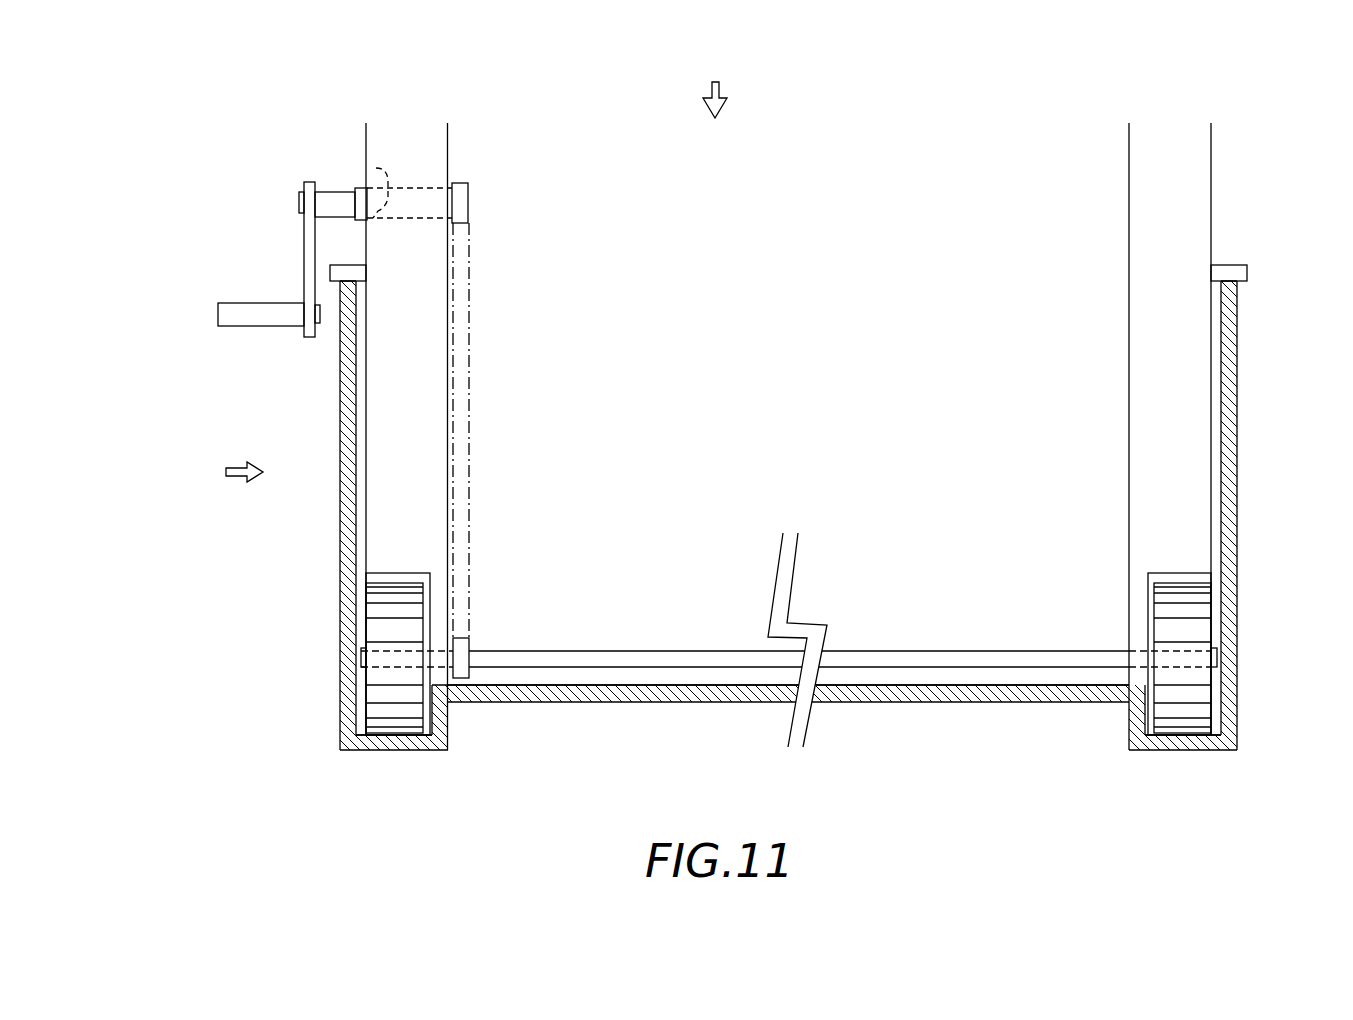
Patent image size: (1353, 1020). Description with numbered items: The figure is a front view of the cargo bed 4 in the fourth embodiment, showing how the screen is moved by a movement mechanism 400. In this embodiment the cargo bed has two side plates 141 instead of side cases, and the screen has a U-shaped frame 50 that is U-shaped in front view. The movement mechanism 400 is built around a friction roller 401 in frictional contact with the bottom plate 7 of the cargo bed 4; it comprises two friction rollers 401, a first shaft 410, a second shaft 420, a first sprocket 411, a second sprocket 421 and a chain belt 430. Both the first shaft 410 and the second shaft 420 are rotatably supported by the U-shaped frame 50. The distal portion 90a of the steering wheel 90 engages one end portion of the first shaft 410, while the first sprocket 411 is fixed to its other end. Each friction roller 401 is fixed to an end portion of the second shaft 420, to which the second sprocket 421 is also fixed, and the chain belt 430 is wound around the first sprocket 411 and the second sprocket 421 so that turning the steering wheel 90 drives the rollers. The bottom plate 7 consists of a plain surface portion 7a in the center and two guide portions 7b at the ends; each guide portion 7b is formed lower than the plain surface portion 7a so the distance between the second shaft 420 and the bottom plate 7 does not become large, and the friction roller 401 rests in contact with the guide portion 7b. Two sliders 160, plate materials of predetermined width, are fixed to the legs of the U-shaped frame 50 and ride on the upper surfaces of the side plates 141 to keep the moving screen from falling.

The cargo bed 4 is at (717, 78).
The movement mechanism 400 is at (210, 472).
The U-shaped frame 50 is at (444, 163).
The slider 160 is at (345, 265).
The side plate 141 is at (338, 415).
The bottom plate 7 is at (684, 717).
The plain surface portion 7a is at (576, 680).
The guide portion 7b is at (407, 735).
The friction roller 401 is at (373, 625).
The second shaft 420 is at (672, 657).
The second sprocket 421 is at (472, 645).
The first sprocket 411 is at (467, 208).
The chain belt 430 is at (470, 372).
The first shaft 410 is at (402, 188).
The distal portion of the steering wheel 90a is at (376, 168).
The steering wheel 90 is at (260, 310).